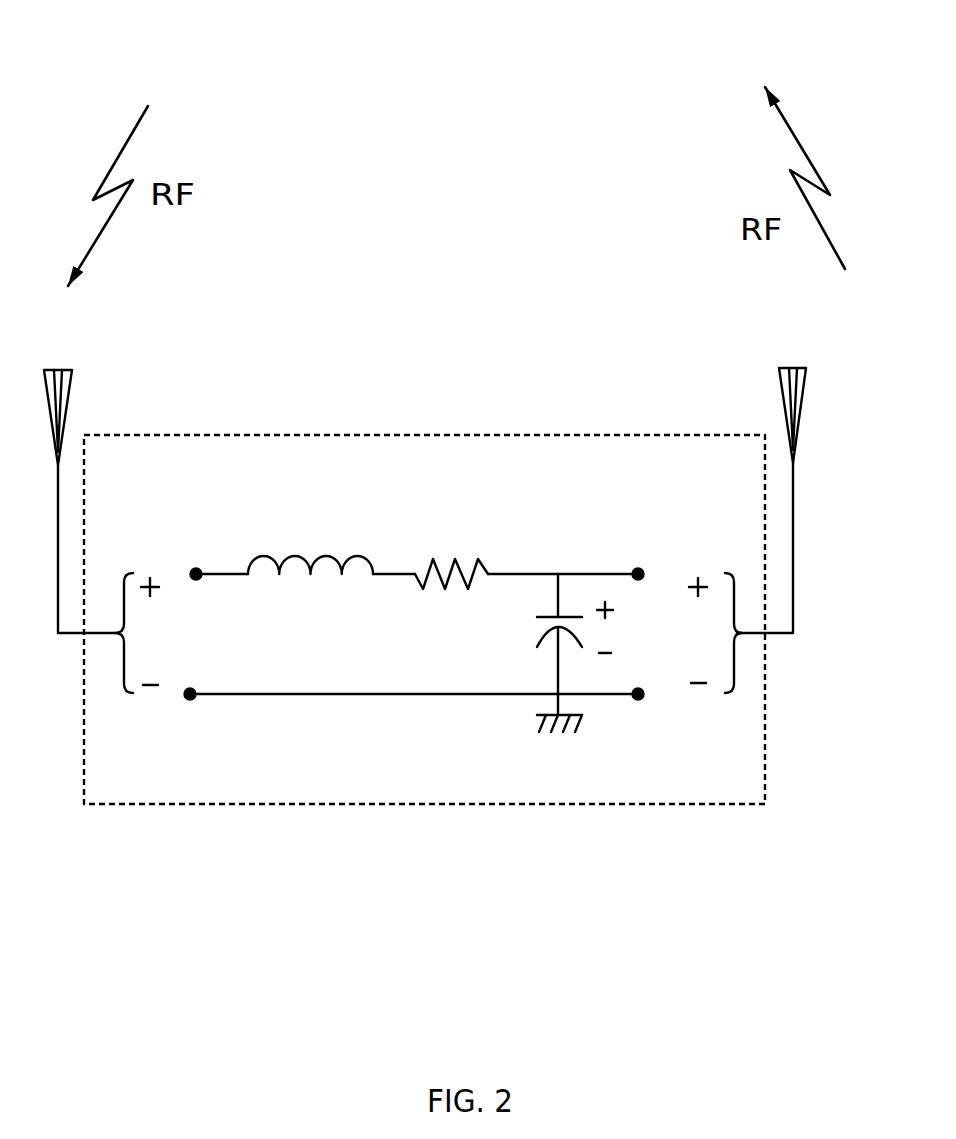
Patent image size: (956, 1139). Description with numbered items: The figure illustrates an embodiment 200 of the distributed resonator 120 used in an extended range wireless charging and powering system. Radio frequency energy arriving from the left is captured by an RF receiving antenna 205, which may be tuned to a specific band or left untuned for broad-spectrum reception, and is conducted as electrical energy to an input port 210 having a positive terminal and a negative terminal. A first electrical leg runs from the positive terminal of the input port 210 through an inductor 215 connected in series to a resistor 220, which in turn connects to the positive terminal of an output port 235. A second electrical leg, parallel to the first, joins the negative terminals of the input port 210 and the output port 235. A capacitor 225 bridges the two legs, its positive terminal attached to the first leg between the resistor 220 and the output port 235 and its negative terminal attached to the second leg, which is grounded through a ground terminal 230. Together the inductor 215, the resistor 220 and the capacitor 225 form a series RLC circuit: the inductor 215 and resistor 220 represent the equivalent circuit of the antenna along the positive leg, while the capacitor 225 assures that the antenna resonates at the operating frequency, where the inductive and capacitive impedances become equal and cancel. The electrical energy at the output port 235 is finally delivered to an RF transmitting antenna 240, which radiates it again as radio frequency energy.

The embodiment of the distributed resonator 200 is at (170, 78).
The distributed resonator 120 is at (428, 408).
The RF receiving antenna 205 is at (85, 395).
The input port 210 is at (138, 562).
The inductor 215 is at (292, 553).
The resistor 220 is at (452, 557).
The capacitor 225 is at (530, 630).
The ground terminal 230 is at (530, 720).
The output port 235 is at (728, 567).
The RF transmitting antenna 240 is at (770, 405).